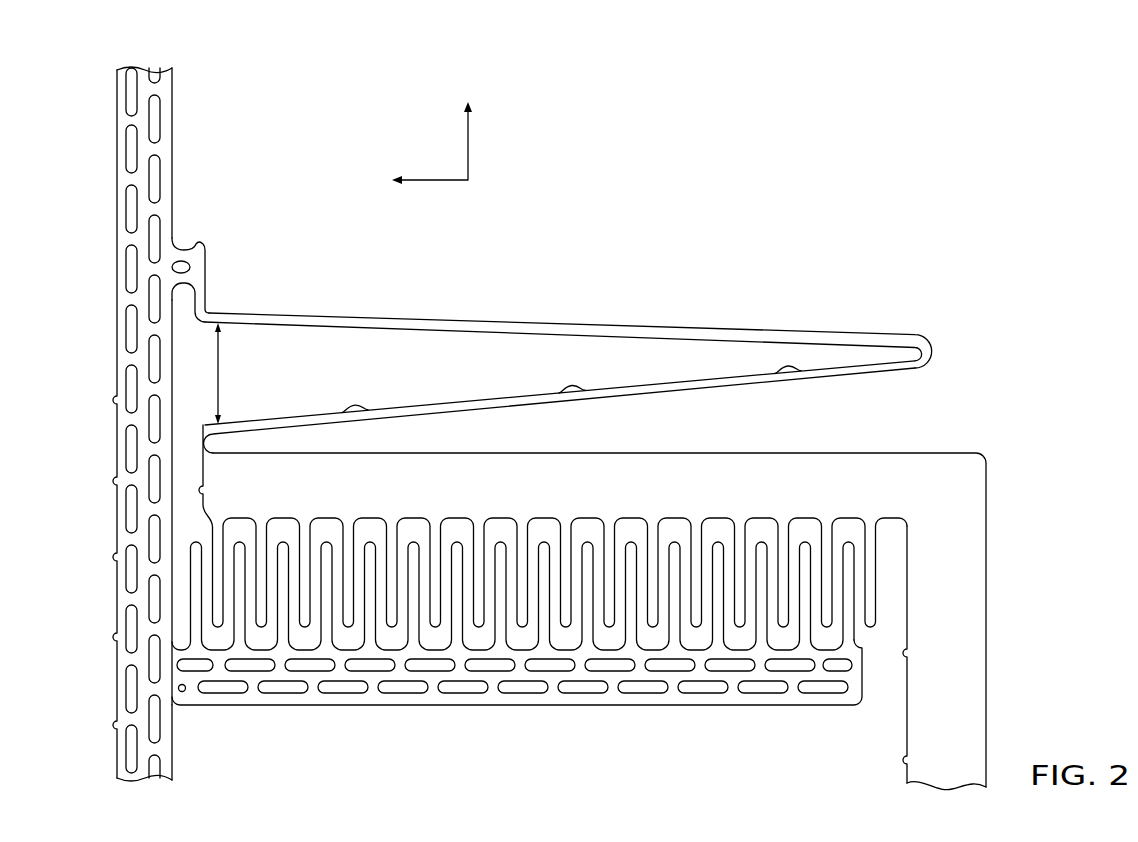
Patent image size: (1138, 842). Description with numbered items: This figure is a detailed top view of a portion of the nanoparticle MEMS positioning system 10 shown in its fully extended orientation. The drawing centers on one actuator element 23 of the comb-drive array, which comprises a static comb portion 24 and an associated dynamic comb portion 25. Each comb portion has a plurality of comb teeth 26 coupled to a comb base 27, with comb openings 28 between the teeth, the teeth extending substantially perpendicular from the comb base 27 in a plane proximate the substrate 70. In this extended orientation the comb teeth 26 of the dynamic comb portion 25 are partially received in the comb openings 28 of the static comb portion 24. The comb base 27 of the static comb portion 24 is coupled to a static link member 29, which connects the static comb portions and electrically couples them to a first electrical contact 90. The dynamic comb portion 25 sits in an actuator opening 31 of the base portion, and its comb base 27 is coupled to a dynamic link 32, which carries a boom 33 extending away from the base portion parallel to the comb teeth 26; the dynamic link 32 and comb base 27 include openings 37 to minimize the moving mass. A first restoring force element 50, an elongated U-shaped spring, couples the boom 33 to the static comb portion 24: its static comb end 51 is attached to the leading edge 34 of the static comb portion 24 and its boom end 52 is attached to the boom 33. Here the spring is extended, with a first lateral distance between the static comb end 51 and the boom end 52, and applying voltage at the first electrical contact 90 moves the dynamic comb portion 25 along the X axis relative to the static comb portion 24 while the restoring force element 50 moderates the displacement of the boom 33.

The nanoparticle MEMS positioning system 10 is at (912, 203).
The actuator element 23 is at (1013, 508).
The static comb portion 24 is at (800, 512).
The dynamic comb portion 25 is at (803, 648).
The comb teeth 26 is at (458, 632).
The comb base 27 is at (457, 512).
The comb openings 28 is at (750, 615).
The static link member 29 is at (945, 751).
The actuator opening 31 is at (257, 753).
The dynamic link 32 is at (128, 690).
The boom 33 is at (138, 122).
The leading edge 34 is at (288, 452).
The openings 37 is at (130, 627).
The first restoring force element 50 is at (452, 320).
The static comb end 51 is at (203, 428).
The boom end 52 is at (207, 313).
The substrate 70 is at (862, 740).
The first electrical contact 90 is at (147, 68).